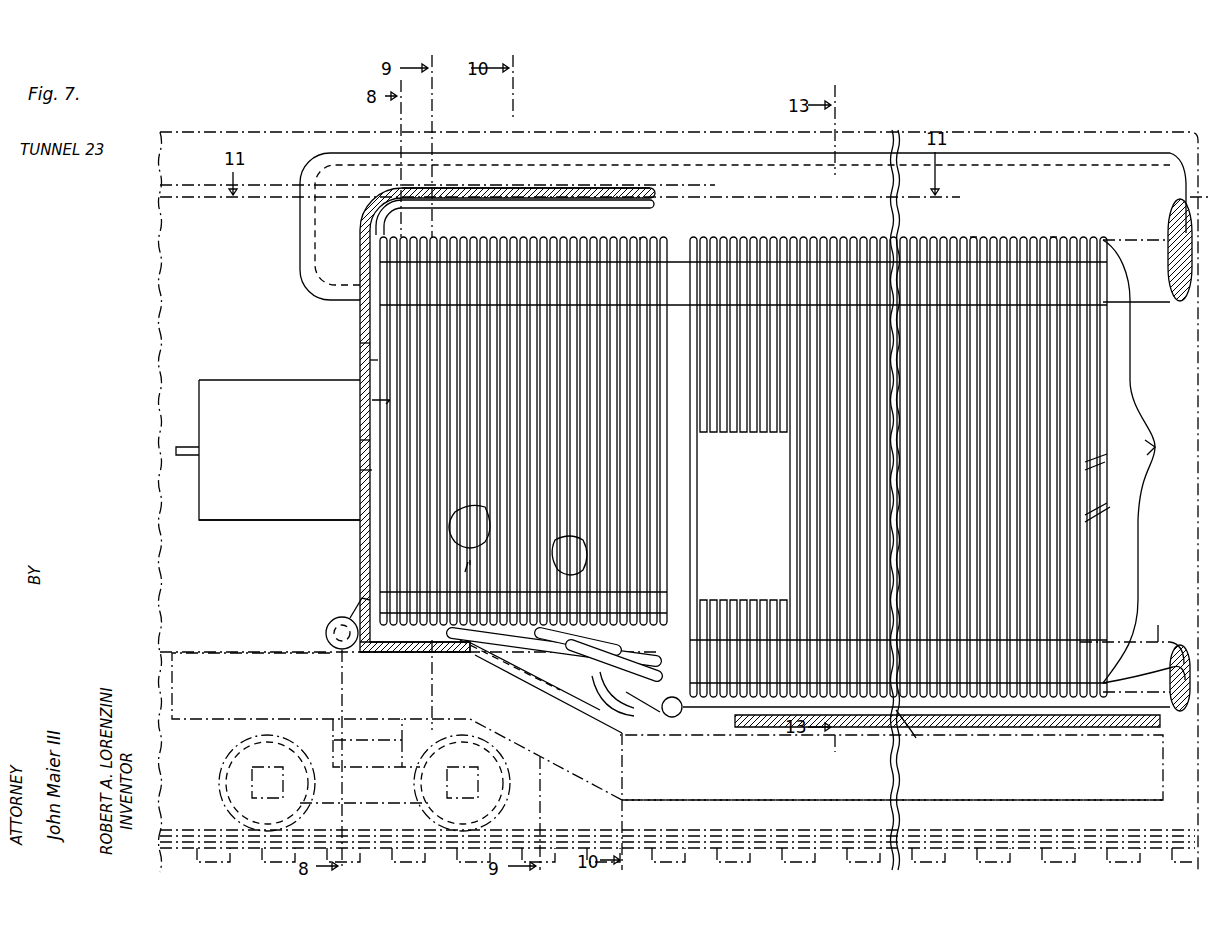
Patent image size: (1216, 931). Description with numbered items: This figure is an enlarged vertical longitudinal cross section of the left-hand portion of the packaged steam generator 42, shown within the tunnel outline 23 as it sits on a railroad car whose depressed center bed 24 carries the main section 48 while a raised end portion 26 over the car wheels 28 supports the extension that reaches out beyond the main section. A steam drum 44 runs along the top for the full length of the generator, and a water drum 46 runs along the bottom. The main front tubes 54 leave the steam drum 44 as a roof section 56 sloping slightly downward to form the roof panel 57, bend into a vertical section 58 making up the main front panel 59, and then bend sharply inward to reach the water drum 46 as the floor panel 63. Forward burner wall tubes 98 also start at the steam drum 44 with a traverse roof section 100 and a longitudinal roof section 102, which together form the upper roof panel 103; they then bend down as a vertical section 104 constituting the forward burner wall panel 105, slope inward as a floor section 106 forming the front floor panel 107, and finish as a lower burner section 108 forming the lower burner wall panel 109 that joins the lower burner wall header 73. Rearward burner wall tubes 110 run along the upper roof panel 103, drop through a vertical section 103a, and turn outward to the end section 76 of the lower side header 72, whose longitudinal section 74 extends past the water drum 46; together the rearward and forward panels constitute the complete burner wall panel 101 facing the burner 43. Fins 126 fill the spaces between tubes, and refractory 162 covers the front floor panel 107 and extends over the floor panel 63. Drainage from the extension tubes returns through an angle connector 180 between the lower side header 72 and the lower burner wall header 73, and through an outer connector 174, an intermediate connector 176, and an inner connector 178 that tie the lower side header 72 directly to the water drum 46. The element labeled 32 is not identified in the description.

The tunnel outline 23 is at (686, 502).
The steam drum 44 is at (625, 165).
The upper roof panel 103 is at (544, 190).
The longitudinal roof section 102 is at (483, 204).
The traverse roof section 100 is at (580, 208).
The fins 126 is at (640, 237).
The roof panel 57 is at (975, 240).
The roof section 56 is at (1055, 240).
The forward burner wall tubes 98 is at (358, 222).
The vertical section 104 is at (360, 343).
The vertical section 103a is at (370, 360).
The packaged steam generator 42 is at (322, 373).
The rearward burner wall tubes 110 is at (388, 403).
The burner wall panel 101 is at (368, 440).
The forward burner wall panel 105 is at (370, 470).
The tab 32 is at (178, 455).
The burners 43 is at (218, 520).
The main section 48 is at (751, 476).
The vertical section 58 is at (1108, 456).
The main front panel 59 is at (1166, 446).
The main front tubes 54 is at (1013, 620).
The refractory 162 is at (1135, 665).
The front floor panel 107 is at (368, 670).
The floor section 106 is at (572, 572).
The end section 76 is at (343, 615).
The lower side header 72 is at (330, 628).
The raised end portions 26 is at (172, 653).
The longitudinal section 74 is at (414, 653).
The intermediate connector 176 is at (520, 650).
The inner connector 178 is at (525, 678).
The outer connector 174 is at (572, 650).
The angle connector 180 is at (610, 690).
The lower burner section 108 is at (648, 642).
The lower burner wall panel 109 is at (663, 710).
The water drum 46 is at (615, 700).
The lower burner wall header 73 is at (669, 714).
The car wheels 28 is at (222, 770).
The floor panel 63 is at (904, 700).
The depressed center bed 24 is at (1096, 800).